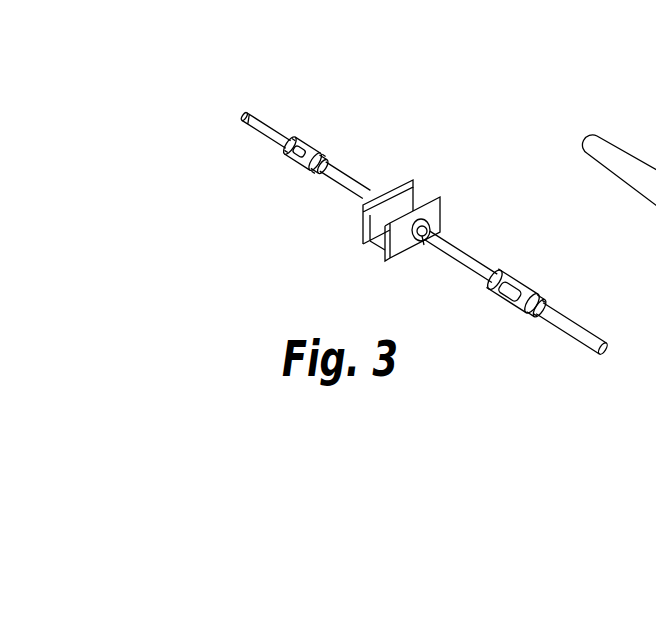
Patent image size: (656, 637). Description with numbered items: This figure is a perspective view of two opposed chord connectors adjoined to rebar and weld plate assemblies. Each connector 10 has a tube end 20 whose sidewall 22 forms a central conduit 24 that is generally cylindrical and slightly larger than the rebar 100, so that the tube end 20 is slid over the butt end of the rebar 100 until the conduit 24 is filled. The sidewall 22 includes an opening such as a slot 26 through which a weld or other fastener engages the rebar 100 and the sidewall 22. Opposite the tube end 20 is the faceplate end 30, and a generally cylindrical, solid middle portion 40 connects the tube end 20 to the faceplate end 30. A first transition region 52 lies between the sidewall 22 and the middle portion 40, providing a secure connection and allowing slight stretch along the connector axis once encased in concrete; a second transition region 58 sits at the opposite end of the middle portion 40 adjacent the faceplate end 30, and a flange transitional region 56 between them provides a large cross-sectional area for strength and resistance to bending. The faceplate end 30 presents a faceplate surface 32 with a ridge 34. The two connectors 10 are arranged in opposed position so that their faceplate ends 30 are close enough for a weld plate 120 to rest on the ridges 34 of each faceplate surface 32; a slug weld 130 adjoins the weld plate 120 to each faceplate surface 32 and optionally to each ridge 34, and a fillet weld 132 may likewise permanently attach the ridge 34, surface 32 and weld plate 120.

The connector 10 is at (347, 178).
The tube end 20 is at (297, 145).
The sidewall 22 is at (312, 155).
The central conduit 24 is at (287, 147).
The slot 26 is at (287, 155).
The faceplate end 30 is at (405, 188).
The faceplate surface 32 is at (366, 221).
The ridge 34 is at (380, 240).
The middle portion 40 is at (364, 188).
The first transition region 52 is at (303, 173).
The flange transitional region 56 is at (375, 198).
The second transition region 58 is at (370, 197).
The rebar 100 is at (250, 127).
The weld plate 120 is at (377, 240).
The slug weld 130 is at (300, 150).
The fillet weld 132 is at (413, 203).